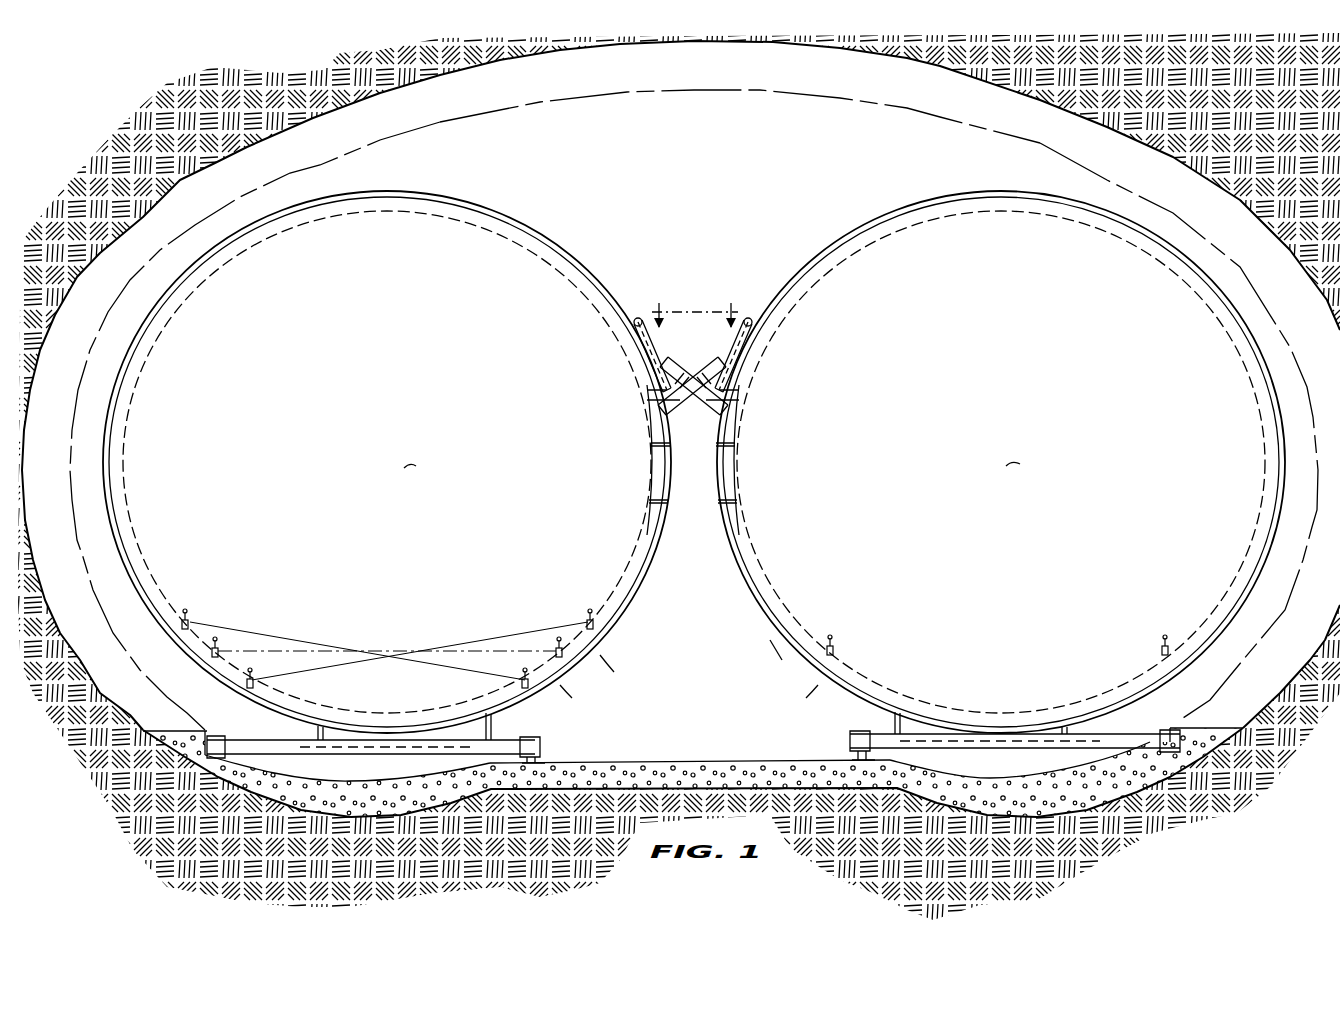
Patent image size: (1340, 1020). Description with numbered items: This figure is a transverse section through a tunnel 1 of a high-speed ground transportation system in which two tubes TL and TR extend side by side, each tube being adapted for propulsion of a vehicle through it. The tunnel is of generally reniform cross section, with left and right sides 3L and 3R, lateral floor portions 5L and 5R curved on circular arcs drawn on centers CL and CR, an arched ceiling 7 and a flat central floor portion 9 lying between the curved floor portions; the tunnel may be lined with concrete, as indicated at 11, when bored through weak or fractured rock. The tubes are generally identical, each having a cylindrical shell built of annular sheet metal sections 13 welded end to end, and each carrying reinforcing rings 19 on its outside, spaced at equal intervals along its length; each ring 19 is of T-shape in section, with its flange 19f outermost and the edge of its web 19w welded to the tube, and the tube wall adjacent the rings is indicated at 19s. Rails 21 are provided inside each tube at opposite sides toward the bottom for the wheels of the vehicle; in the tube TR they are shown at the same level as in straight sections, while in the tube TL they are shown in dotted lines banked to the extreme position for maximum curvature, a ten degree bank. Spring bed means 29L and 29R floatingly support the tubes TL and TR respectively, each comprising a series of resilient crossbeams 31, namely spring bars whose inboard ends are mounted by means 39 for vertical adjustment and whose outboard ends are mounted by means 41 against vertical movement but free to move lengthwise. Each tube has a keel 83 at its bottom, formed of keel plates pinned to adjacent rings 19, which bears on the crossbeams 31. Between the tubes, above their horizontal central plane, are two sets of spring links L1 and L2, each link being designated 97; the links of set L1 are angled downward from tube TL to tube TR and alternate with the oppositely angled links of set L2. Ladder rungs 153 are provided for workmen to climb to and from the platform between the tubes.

The tunnel 1 is at (1114, 121).
The left side of tunnel 3L is at (70, 272).
The right side of tunnel 3R is at (1313, 491).
The left lateral floor portion 5L is at (380, 786).
The right lateral floor portion 5R is at (988, 781).
The arched ceiling 7 is at (679, 46).
The flat central floor portion 9 is at (702, 760).
The concrete lining 11 is at (625, 97).
The annular sheet metal section 13 is at (522, 249).
The reinforcing ring 19 is at (581, 252).
The flange of reinforcing ring 19f is at (608, 664).
The tube shell side 19s is at (768, 642).
The web of reinforcing ring 19w is at (563, 684).
The rail 21 is at (233, 645).
The spring bed means 29L is at (540, 739).
The spring bed means 29R is at (866, 734).
The resilient crossbeam 31 is at (258, 745).
The inboard end mounting means 39 is at (552, 757).
The outboard end mounting means 41 is at (208, 738).
The keel 83 is at (318, 736).
The spring link 97 is at (707, 415).
The ladder rungs 153 is at (730, 520).
The first set of spring links L1 is at (672, 362).
The second set of spring links L2 is at (709, 362).
The left tube TL is at (463, 214).
The right tube TR is at (908, 216).
The left arc center CL is at (422, 464).
The right arc center CR is at (1030, 462).